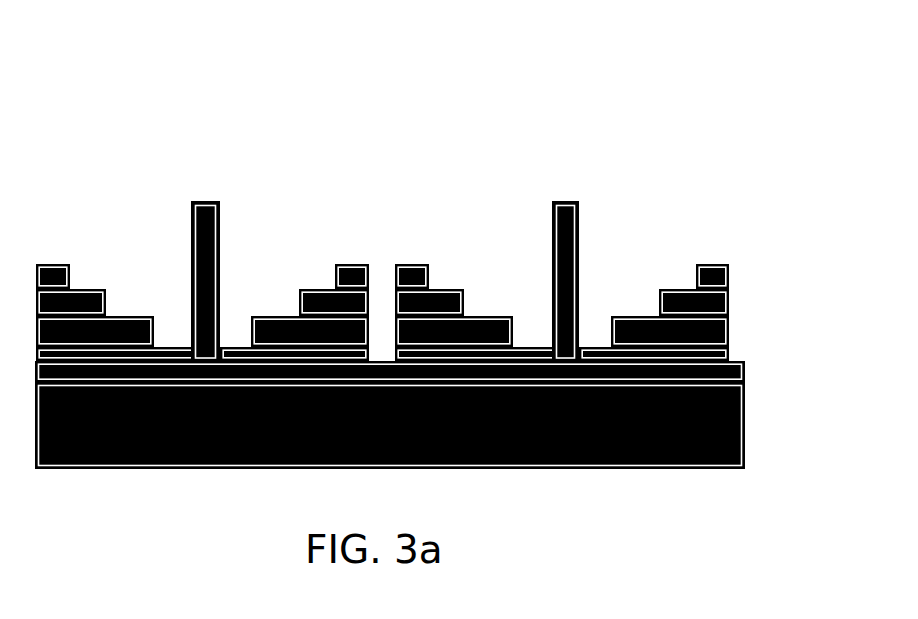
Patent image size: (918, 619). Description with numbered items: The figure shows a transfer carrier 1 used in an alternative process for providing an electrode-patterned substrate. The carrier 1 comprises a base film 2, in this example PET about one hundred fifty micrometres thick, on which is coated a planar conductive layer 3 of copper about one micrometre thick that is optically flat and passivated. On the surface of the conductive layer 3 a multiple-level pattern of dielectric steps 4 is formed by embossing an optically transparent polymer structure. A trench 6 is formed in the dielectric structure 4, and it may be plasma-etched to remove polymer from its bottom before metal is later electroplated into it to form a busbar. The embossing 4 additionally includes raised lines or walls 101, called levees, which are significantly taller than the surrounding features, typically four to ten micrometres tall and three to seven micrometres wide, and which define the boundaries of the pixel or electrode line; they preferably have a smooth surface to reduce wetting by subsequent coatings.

The transfer carrier 1 is at (444, 305).
The base film 2 is at (720, 439).
The conductive layer 3 is at (745, 370).
The dielectric steps 4 is at (716, 295).
The trench 6 is at (375, 255).
The levees 101 is at (205, 190).